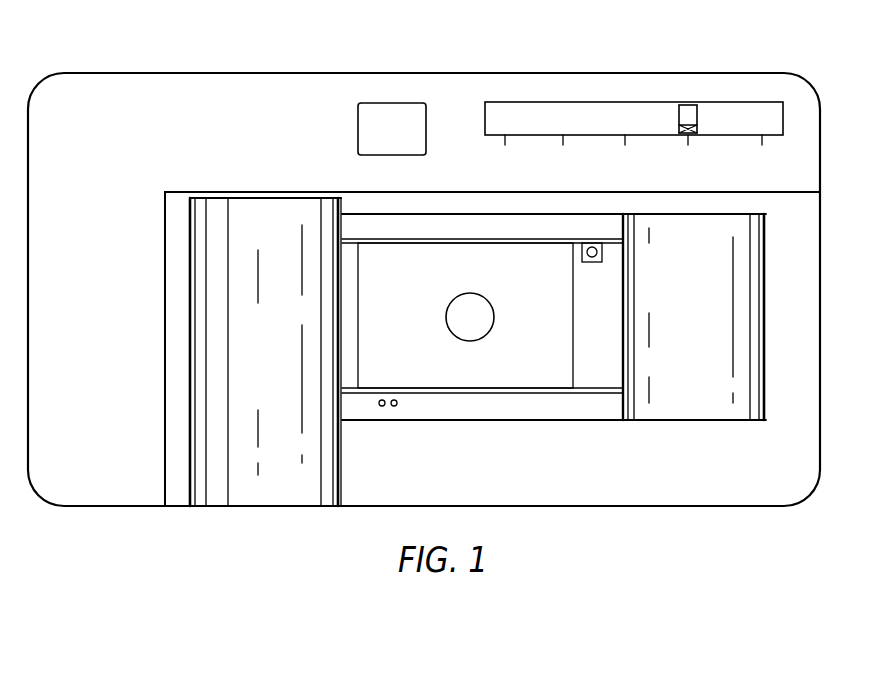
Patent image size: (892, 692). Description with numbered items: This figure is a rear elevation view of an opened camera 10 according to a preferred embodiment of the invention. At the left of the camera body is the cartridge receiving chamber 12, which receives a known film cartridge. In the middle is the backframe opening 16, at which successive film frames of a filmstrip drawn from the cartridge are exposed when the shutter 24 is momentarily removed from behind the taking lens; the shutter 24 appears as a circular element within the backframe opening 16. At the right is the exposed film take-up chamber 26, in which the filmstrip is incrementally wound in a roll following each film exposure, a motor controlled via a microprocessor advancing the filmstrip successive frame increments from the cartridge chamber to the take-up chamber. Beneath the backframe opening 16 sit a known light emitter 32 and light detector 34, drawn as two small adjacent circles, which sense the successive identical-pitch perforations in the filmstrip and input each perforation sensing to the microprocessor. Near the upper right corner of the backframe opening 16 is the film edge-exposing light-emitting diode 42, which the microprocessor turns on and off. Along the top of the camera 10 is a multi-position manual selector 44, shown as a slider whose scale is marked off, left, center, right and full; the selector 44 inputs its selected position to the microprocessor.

The camera 10 is at (472, 57).
The cartridge receiving chamber 12 is at (270, 361).
The backframe opening 16 is at (405, 352).
The shutter 24 is at (458, 306).
The exposed film take-up chamber 26 is at (710, 357).
The light emitter 32 is at (396, 406).
The light detector 34 is at (380, 406).
The film edge-exposing light-emitting diode (LED) 42 is at (598, 252).
The multi-position manual selector 44 is at (687, 107).